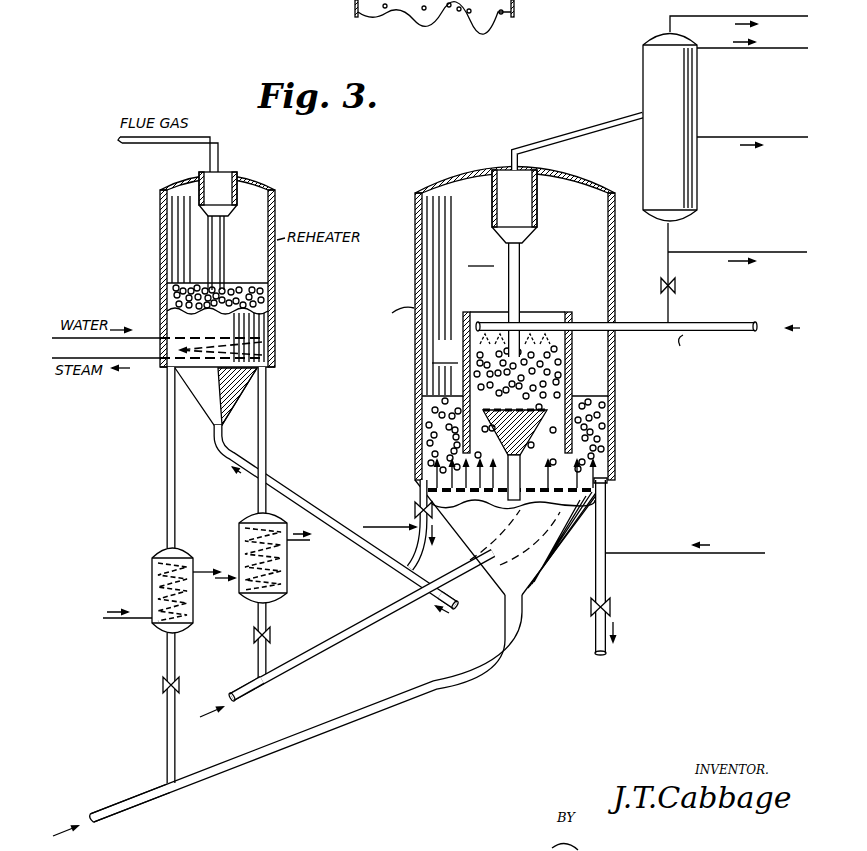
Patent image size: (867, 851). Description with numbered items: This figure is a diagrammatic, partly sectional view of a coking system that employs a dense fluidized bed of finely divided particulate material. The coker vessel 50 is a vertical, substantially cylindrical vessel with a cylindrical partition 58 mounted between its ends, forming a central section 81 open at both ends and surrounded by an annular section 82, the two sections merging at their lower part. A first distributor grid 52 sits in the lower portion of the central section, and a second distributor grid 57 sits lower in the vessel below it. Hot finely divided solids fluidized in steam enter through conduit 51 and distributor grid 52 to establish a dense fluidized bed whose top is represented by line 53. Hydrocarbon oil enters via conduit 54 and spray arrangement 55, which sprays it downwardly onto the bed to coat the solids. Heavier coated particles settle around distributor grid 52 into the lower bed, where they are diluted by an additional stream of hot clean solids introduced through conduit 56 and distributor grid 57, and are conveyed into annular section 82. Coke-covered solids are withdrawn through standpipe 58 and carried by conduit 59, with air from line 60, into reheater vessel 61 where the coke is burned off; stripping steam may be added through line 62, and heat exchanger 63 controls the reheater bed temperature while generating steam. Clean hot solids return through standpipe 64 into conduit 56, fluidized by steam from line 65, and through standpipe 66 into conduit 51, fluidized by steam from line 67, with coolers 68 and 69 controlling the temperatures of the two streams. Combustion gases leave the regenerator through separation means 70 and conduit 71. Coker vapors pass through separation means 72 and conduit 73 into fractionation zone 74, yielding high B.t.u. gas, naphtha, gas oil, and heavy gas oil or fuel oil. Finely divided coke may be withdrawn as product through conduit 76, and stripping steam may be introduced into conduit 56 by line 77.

The coker vessel 50 is at (566, 390).
The conduit 51 is at (340, 641).
The first distributor grid 52 is at (522, 410).
The top of dense fluidized bed 53 is at (548, 352).
The conduit 54 is at (634, 337).
The spray arrangement 55 is at (534, 321).
The conduit 56 is at (356, 732).
The second distributor grid 57 is at (600, 478).
The cylindrical partition 58 is at (466, 312).
The conduit 59 is at (278, 487).
The line 60 is at (451, 601).
The reheater vessel 61 is at (277, 293).
The line 62 is at (368, 529).
The heat exchanger 63 is at (183, 338).
The standpipe 64 is at (167, 440).
The line 65 is at (118, 806).
The standpipe 66 is at (268, 393).
The line 67 is at (236, 690).
The cooler 68 is at (288, 580).
The cooler 69 is at (152, 565).
The separation means 70 is at (226, 212).
The conduit 71 is at (220, 153).
The separation means 72 is at (539, 216).
The conduit 73 is at (586, 140).
The fractionation zone 74 is at (642, 53).
The conduit 76 is at (607, 517).
The line 77 is at (745, 553).
The central section 81 is at (481, 255).
The annular section 82 is at (445, 352).